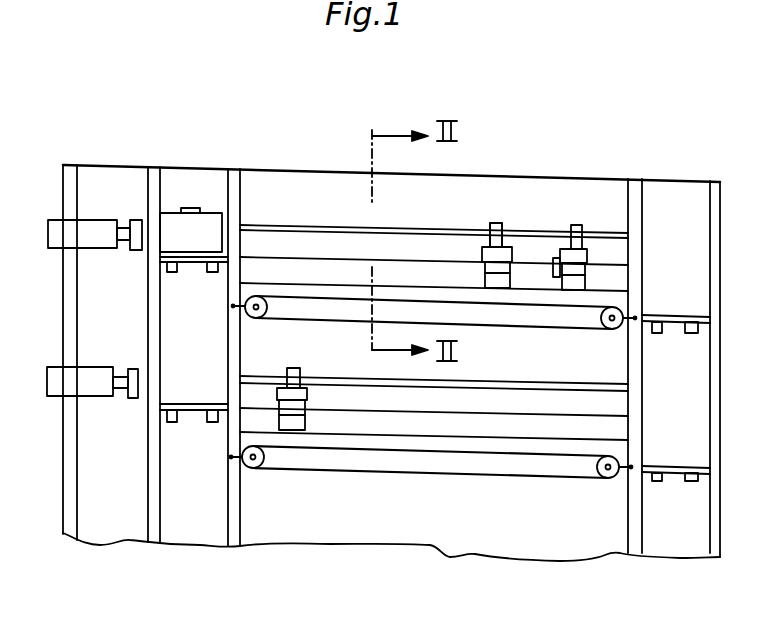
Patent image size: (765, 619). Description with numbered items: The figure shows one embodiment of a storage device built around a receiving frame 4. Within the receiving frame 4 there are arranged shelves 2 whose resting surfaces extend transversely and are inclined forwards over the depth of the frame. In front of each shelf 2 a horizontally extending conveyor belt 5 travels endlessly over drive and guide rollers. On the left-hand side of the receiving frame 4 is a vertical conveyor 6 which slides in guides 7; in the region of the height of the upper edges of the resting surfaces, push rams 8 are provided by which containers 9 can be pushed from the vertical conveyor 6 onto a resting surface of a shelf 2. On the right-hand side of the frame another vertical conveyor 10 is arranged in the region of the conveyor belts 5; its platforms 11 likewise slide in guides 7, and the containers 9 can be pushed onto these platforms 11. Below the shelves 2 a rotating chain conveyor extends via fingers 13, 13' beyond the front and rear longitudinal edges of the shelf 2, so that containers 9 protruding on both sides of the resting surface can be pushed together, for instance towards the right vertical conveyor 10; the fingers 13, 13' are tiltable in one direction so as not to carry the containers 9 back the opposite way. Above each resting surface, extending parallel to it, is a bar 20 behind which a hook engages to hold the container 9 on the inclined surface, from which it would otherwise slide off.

The shelf 2 is at (603, 281).
The receiving frame 4 is at (606, 168).
The conveyor belt 5 is at (552, 320).
The vertical conveyor 6 is at (187, 506).
The guides 7 is at (148, 467).
The push ram 8 is at (138, 240).
The container 9 is at (205, 226).
The vertical conveyor 10 is at (675, 540).
The platform 11 is at (668, 315).
The finger 13 is at (432, 326).
The finger 13' is at (474, 241).
The bar 20 is at (435, 228).